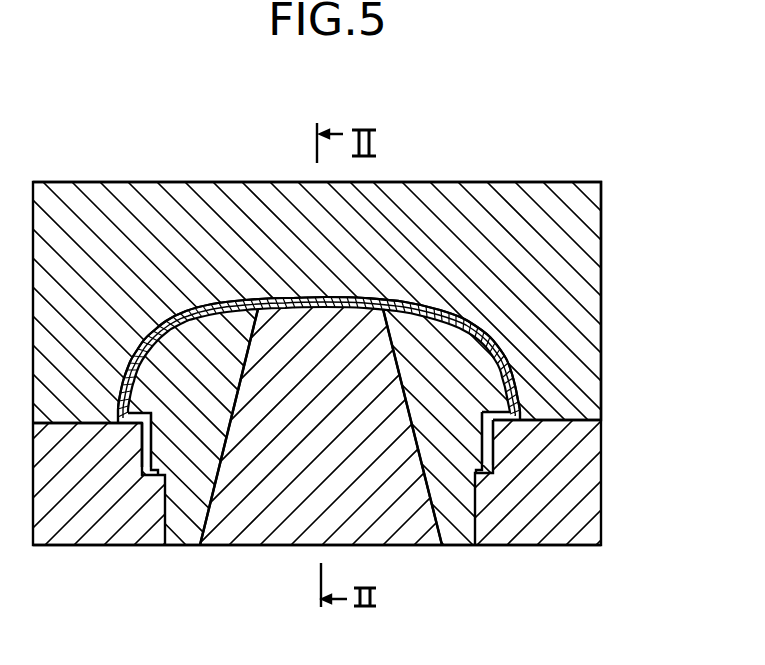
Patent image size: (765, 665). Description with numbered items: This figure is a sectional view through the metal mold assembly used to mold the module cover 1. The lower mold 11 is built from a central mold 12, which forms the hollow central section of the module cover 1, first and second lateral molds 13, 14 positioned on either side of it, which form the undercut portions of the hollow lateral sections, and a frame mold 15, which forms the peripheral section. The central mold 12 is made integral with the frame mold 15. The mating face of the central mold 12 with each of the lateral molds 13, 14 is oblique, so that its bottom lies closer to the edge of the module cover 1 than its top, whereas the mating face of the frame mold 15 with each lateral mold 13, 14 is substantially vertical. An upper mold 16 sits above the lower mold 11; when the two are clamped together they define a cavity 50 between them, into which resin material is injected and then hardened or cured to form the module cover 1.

The module cover 1 is at (404, 300).
The lower mold 11 is at (608, 478).
The central mold 12 is at (407, 530).
The first lateral mold 13 is at (183, 533).
The second lateral mold 14 is at (457, 523).
The frame mold 15 is at (72, 532).
The upper mold 16 is at (493, 203).
The cavity 50 is at (520, 390).